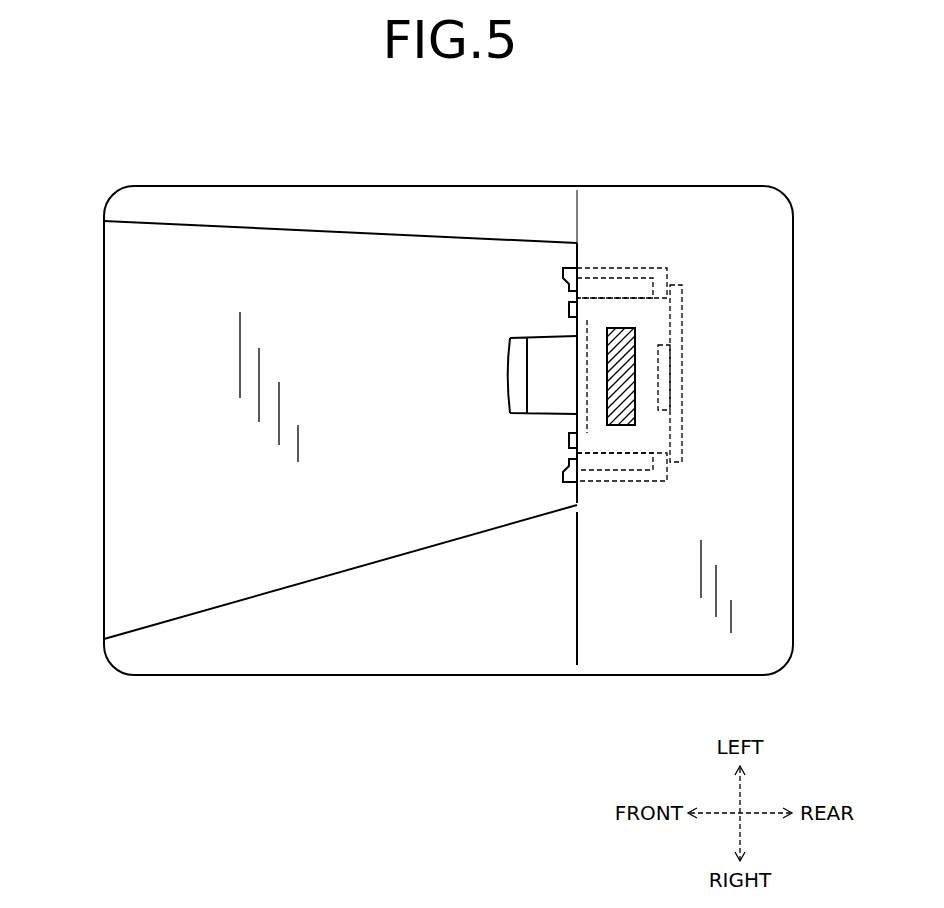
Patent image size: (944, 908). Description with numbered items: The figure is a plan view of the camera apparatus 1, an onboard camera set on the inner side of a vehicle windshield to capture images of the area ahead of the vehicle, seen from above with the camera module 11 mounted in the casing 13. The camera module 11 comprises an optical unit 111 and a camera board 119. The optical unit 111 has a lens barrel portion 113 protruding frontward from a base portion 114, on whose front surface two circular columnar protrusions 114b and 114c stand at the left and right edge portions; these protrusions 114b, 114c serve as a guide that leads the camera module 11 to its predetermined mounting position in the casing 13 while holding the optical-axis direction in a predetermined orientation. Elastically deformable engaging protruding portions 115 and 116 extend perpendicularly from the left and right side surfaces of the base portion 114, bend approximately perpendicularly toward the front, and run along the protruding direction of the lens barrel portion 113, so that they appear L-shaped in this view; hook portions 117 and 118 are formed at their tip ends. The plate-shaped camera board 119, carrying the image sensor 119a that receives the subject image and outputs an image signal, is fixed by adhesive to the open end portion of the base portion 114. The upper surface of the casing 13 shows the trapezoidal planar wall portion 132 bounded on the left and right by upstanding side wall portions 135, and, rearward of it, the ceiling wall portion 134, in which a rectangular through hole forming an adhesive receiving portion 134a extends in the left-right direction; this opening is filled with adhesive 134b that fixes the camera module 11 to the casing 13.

The camera apparatus 1 is at (157, 163).
The camera module 11 is at (653, 249).
The optical unit 111 is at (632, 252).
The lens barrel portion 113 is at (541, 336).
The base portion 114 is at (641, 297).
The protrusion 114b is at (569, 305).
The protrusion 114c is at (577, 440).
The engaging protruding portion 115 is at (609, 268).
The engaging protruding portion 116 is at (643, 481).
The hook portion 117 is at (565, 273).
The hook portion 118 is at (567, 483).
The camera board 119 is at (682, 337).
The image sensor 119a is at (672, 375).
The casing 13 is at (100, 430).
The planar wall portion 132 is at (157, 297).
The ceiling wall portion 134 is at (740, 272).
The adhesive receiving portion 134a is at (636, 420).
The adhesive 134b is at (618, 390).
The side wall portion 135 is at (291, 232).